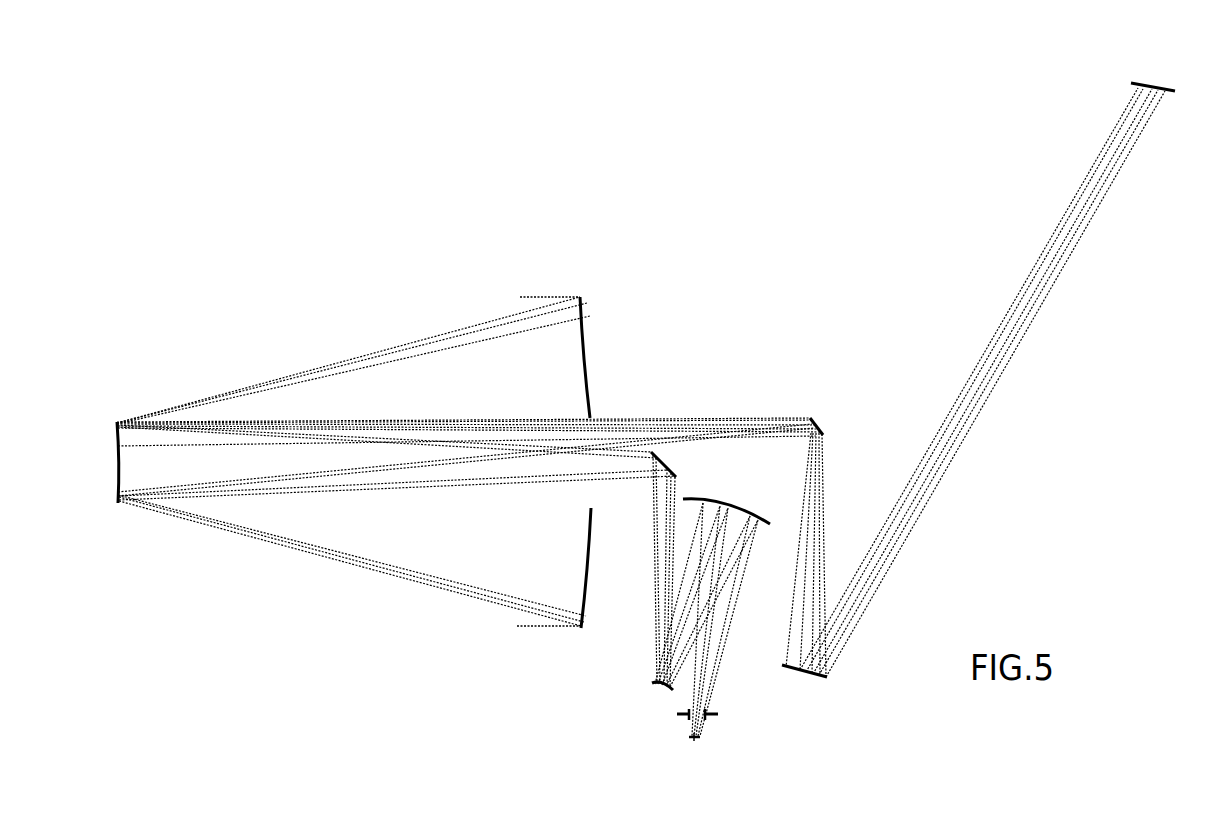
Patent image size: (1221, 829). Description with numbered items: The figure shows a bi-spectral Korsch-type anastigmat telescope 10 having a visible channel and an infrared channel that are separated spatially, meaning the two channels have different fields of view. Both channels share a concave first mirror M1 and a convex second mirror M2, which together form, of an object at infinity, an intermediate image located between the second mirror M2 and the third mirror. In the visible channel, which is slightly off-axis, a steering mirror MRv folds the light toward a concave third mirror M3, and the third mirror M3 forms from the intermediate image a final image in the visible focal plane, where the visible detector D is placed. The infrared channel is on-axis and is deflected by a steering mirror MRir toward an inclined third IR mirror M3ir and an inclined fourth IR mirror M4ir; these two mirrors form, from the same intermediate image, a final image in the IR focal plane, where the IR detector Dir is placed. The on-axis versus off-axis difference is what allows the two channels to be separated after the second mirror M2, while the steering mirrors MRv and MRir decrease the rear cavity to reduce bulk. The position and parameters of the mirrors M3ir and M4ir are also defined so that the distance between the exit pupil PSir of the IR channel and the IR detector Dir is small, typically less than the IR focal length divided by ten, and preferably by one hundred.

The bi-spectral Korsch-type anastigmat telescope 10 is at (436, 296).
The first mirror M1 is at (591, 358).
The second mirror M2 is at (116, 458).
The third mirror M3 is at (803, 672).
The steering mirror MRv is at (825, 422).
The steering mirror MRir is at (678, 463).
The fourth IR mirror M4ir is at (715, 500).
The third IR mirror M3ir is at (652, 686).
The exit pupil PSir is at (722, 712).
The IR detector Dir is at (700, 739).
The visible detector D is at (1152, 82).